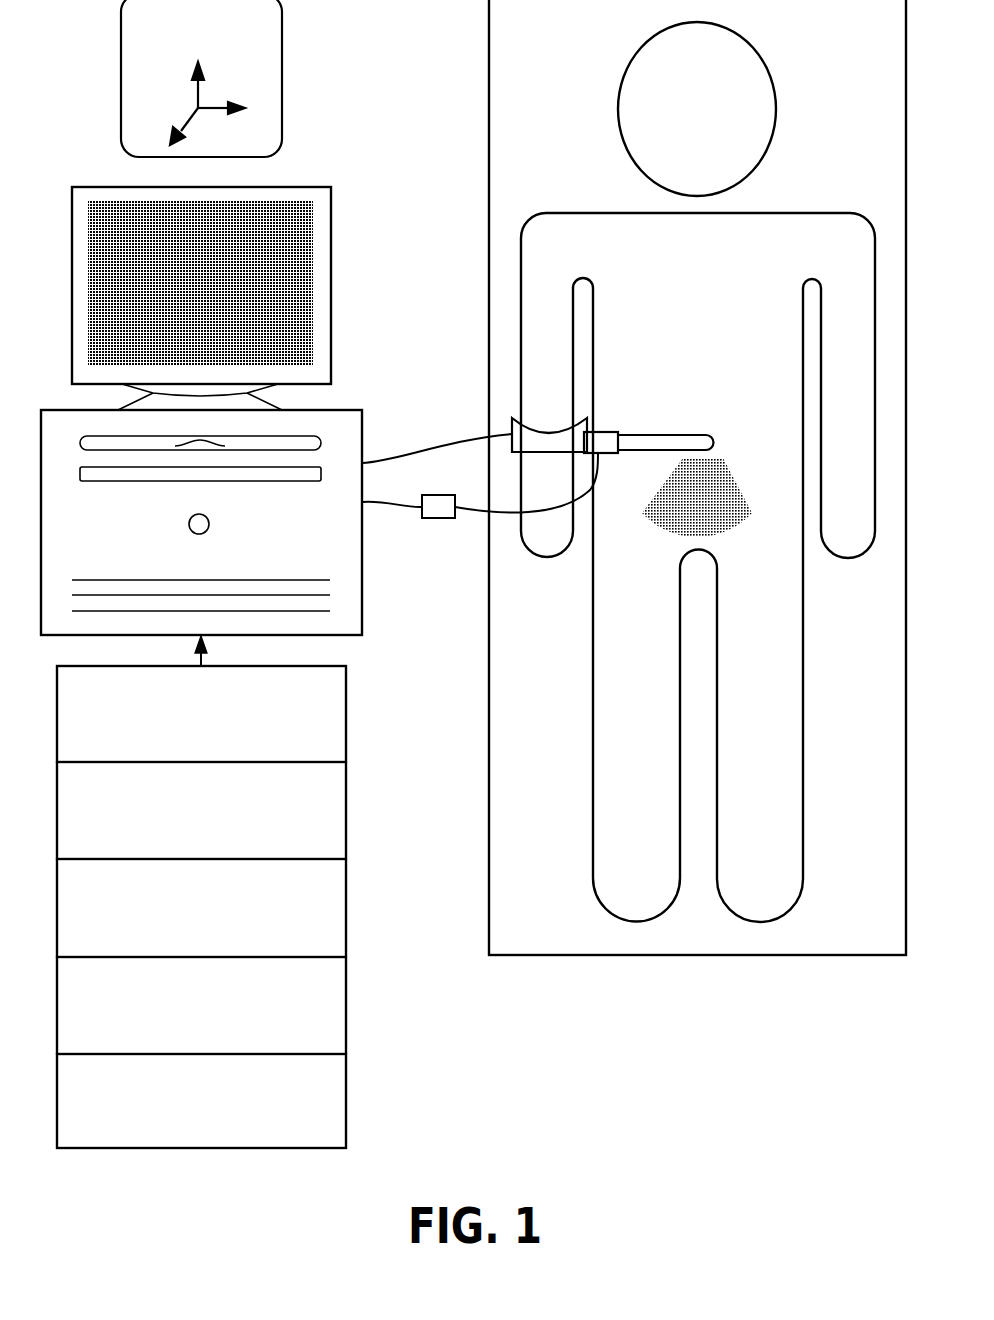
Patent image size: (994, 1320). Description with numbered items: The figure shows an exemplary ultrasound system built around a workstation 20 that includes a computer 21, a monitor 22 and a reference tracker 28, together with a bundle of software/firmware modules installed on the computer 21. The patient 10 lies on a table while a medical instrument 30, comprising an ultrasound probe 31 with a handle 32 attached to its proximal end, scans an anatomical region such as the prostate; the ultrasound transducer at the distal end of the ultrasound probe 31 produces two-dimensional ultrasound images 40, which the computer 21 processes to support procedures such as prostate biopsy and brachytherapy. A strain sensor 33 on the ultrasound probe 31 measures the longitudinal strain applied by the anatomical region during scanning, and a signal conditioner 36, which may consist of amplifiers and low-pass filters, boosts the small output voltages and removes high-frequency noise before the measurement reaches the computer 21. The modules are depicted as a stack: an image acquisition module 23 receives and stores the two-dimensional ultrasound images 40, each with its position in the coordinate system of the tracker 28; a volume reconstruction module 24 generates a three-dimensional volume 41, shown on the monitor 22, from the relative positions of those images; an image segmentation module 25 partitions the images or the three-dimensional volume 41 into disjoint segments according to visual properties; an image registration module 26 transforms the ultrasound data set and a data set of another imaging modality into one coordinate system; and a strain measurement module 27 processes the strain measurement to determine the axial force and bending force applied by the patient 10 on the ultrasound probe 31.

The patient 10 is at (820, 235).
The workstation 20 is at (246, 888).
The computer 21 is at (348, 410).
The monitor 22 is at (332, 217).
The image acquisition module 23 is at (99, 703).
The volume reconstruction module 24 is at (99, 800).
The image segmentation module 25 is at (99, 896).
The image registration module 26 is at (99, 994).
The strain measurement module 27 is at (99, 1091).
The reference tracker 28 is at (283, 68).
The medical instrument 30 is at (643, 396).
The ultrasound probe 31 is at (673, 433).
The handle 32 is at (553, 417).
The strain sensor 33 is at (600, 430).
The signal conditioner 36 is at (438, 518).
The 2D ultrasound images 40 is at (728, 537).
The 3D volume 41 is at (279, 303).